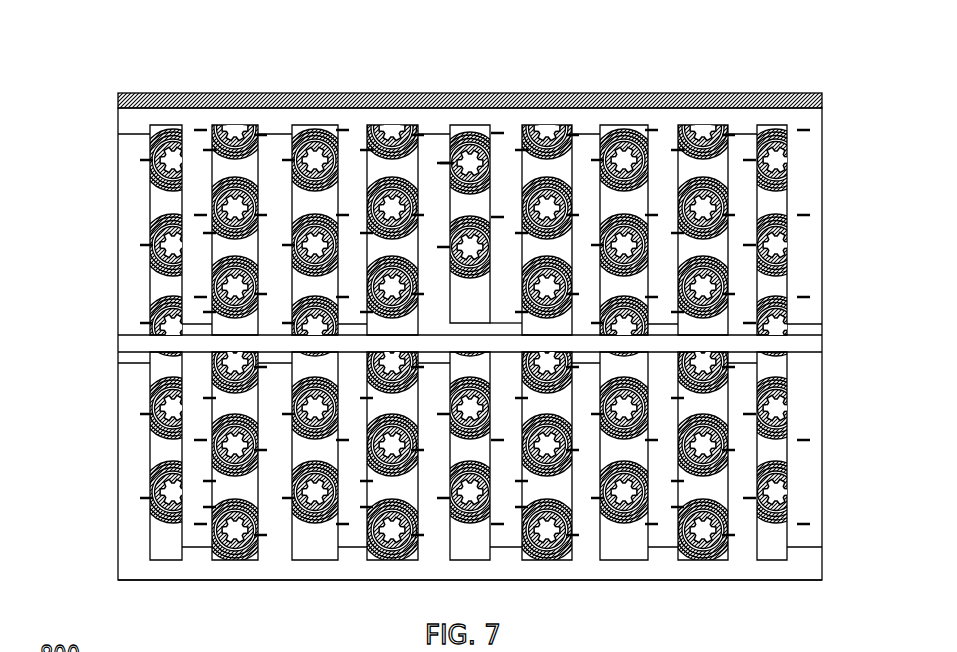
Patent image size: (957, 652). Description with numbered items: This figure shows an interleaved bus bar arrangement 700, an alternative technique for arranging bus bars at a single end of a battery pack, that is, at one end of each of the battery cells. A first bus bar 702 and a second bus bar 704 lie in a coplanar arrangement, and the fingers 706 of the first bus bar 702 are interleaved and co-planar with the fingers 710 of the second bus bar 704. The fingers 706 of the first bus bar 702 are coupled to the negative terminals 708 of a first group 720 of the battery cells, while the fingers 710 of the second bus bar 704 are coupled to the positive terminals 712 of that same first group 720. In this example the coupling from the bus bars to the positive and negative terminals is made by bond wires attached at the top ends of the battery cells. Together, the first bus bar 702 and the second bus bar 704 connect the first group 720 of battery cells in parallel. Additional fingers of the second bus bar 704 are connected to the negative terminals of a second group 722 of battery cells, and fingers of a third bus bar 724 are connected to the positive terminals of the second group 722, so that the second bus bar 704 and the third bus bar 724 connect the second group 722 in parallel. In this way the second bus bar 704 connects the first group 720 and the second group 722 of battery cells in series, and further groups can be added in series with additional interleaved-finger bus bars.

The interleaved bus bar arrangement 700 is at (122, 58).
The first bus bar 702 is at (810, 255).
The second bus bar 704 is at (810, 475).
The fingers of the first bus bar 706 is at (515, 155).
The negative terminals 708 is at (463, 140).
The fingers of the second bus bar 710 is at (420, 135).
The positive terminals 712 is at (452, 158).
The first group of battery cells 720 is at (108, 108).
The second group of battery cells 722 is at (108, 352).
The third bus bar 724 is at (580, 573).